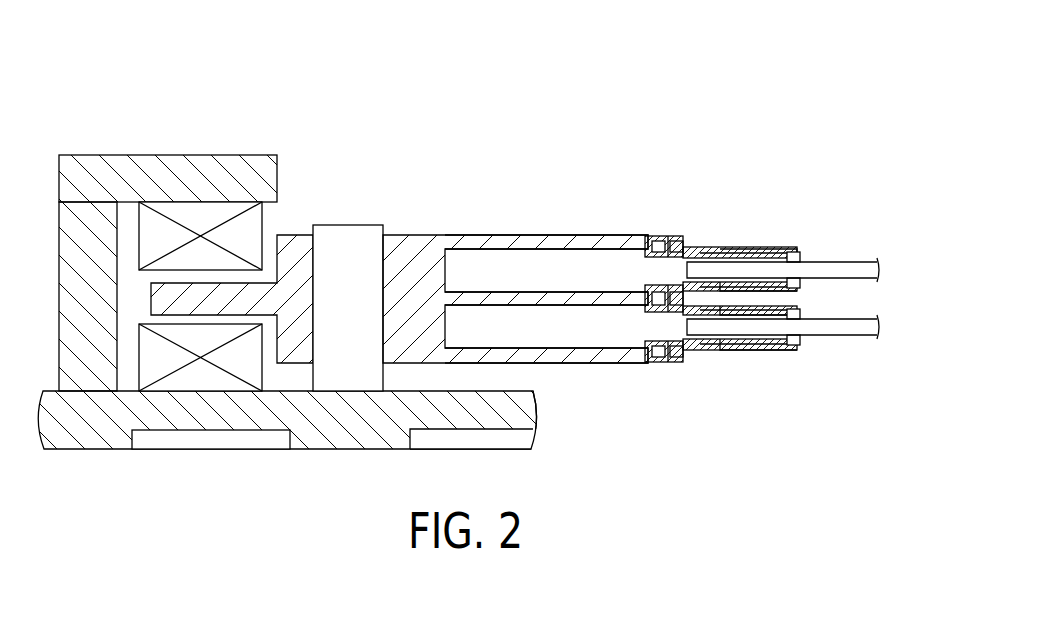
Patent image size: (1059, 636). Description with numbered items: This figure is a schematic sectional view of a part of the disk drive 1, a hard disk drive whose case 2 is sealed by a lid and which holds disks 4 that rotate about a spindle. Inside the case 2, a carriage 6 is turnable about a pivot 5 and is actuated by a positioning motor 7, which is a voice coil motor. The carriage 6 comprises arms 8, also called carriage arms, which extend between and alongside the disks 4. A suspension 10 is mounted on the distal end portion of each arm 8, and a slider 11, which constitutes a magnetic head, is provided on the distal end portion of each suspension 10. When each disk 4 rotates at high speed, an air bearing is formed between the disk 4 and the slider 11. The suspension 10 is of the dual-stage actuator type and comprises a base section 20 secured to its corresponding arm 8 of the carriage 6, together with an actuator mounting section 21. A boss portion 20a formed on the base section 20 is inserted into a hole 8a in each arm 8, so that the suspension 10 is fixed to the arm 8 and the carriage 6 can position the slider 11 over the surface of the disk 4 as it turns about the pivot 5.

The disk drive 1 is at (216, 104).
The case 2 is at (103, 450).
The disk 4 is at (858, 262).
The pivot 5 is at (348, 224).
The carriage 6 is at (497, 226).
The positioning motor 7 is at (203, 380).
The arm 8 is at (590, 234).
The hole 8a is at (664, 240).
The suspension 10 is at (765, 250).
The slider 11 is at (810, 252).
The base section 20 is at (687, 247).
The boss portion 20a is at (655, 236).
The actuator mounting section 21 is at (712, 247).